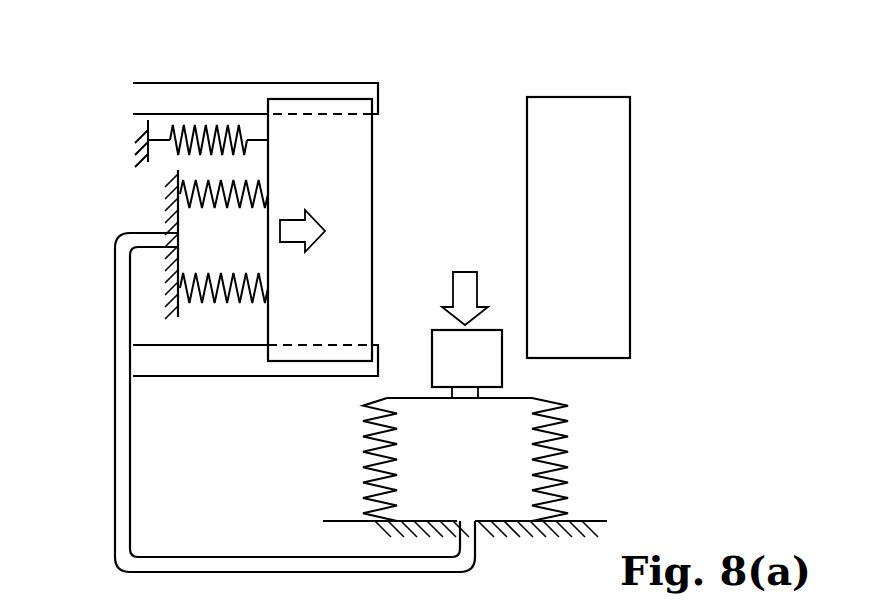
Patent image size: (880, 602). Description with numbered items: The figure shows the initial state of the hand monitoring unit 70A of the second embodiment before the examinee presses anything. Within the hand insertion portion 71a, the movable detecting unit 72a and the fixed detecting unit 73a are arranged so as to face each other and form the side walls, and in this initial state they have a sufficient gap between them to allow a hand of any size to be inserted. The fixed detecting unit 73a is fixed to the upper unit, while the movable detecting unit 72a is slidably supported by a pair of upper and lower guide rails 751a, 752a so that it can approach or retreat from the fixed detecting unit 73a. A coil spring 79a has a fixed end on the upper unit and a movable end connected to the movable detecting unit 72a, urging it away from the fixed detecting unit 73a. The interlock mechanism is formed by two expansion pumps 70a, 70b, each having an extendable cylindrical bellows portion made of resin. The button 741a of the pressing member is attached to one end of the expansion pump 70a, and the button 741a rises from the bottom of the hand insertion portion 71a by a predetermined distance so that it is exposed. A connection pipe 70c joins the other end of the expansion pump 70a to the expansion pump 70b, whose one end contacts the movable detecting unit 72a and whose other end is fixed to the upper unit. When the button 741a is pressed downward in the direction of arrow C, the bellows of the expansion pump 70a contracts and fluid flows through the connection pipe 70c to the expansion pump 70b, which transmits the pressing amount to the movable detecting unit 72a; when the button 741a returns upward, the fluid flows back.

The hand monitoring unit 70A is at (125, 38).
The upper guide rail 751a is at (203, 92).
The lower guide rail 752a is at (207, 365).
The movable detecting unit 72a is at (352, 140).
The coil spring 79a is at (175, 156).
The expansion pump 70b is at (190, 267).
The connection pipe 70c is at (123, 512).
The fixed detecting unit 73a is at (605, 103).
The hand insertion portion 71a is at (467, 114).
The button 741a is at (483, 362).
The expansion pump 70a is at (505, 457).